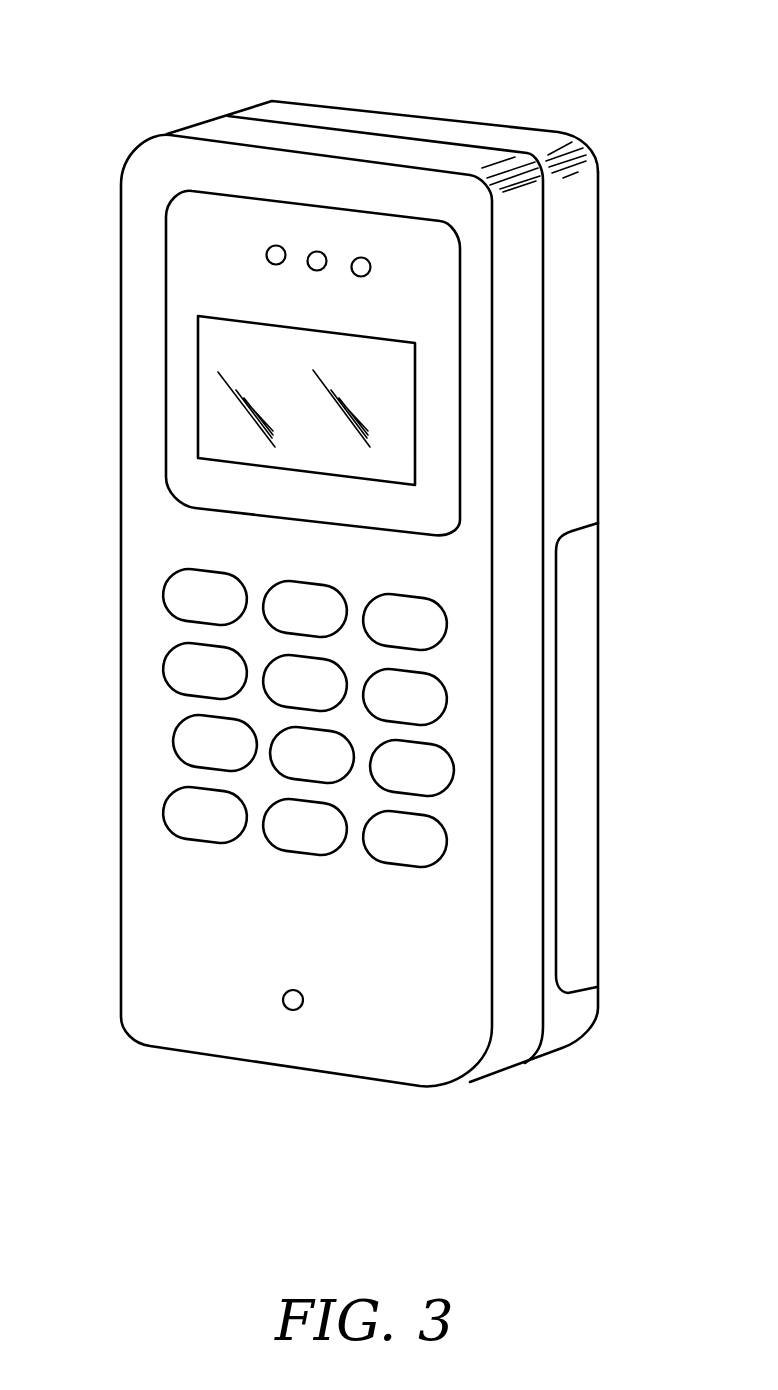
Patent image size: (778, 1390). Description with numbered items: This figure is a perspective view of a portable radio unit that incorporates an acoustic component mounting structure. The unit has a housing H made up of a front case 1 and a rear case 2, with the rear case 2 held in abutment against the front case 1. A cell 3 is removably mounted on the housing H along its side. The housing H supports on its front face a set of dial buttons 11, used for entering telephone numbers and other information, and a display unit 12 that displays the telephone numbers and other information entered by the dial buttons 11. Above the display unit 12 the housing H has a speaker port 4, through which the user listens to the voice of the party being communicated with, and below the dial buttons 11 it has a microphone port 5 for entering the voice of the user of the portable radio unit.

The housing H is at (372, 110).
The front case 1 is at (139, 145).
The rear case 2 is at (588, 143).
The cell 3 is at (599, 718).
The speaker port 4 is at (267, 257).
The microphone port 5 is at (291, 1010).
The dial buttons 11 is at (192, 592).
The display unit 12 is at (377, 408).